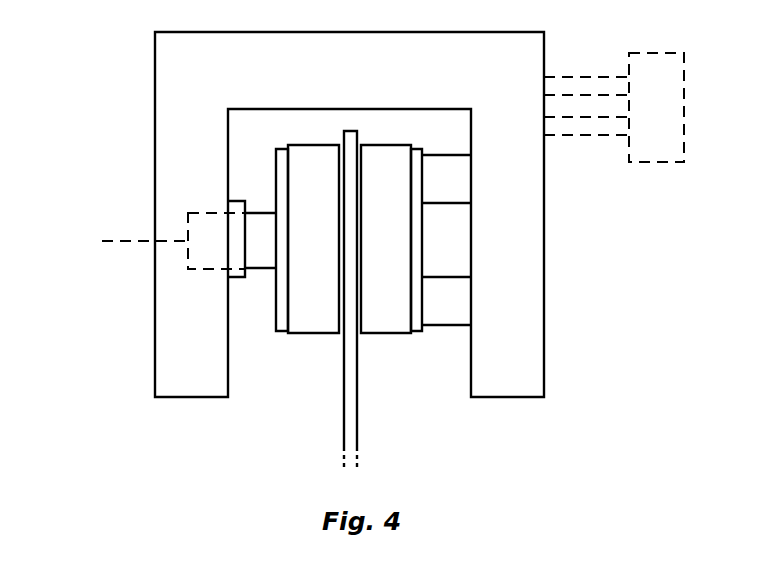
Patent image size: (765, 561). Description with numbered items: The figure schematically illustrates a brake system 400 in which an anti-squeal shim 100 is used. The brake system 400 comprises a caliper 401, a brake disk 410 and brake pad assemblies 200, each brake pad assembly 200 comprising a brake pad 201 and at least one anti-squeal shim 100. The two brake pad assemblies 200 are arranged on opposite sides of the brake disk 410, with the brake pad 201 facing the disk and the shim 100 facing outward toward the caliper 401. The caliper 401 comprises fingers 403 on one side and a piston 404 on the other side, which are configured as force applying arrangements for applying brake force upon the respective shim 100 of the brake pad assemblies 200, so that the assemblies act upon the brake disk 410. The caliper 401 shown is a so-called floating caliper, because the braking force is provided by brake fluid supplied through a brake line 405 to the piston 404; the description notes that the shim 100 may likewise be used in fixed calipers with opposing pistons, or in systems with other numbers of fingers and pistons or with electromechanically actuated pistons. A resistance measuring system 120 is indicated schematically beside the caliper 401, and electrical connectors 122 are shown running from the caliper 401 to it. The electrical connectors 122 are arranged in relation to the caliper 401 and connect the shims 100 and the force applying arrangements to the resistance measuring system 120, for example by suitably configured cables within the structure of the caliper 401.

The anti-squeal shim 100 is at (283, 332).
The resistance measuring system 120 is at (674, 52).
The electrical connectors 122 is at (589, 60).
The brake pad assembly 200 is at (350, 288).
The brake pad 201 is at (422, 407).
The brake system 400 is at (465, 447).
The caliper 401 is at (155, 77).
The fingers 403 is at (440, 203).
The piston 404 is at (260, 270).
The brake line 405 is at (112, 242).
The brake disk 410 is at (342, 443).